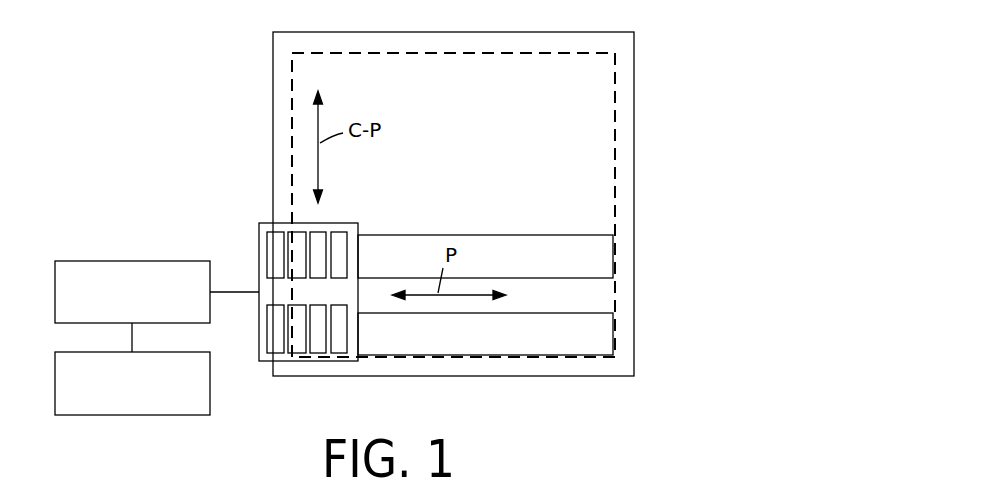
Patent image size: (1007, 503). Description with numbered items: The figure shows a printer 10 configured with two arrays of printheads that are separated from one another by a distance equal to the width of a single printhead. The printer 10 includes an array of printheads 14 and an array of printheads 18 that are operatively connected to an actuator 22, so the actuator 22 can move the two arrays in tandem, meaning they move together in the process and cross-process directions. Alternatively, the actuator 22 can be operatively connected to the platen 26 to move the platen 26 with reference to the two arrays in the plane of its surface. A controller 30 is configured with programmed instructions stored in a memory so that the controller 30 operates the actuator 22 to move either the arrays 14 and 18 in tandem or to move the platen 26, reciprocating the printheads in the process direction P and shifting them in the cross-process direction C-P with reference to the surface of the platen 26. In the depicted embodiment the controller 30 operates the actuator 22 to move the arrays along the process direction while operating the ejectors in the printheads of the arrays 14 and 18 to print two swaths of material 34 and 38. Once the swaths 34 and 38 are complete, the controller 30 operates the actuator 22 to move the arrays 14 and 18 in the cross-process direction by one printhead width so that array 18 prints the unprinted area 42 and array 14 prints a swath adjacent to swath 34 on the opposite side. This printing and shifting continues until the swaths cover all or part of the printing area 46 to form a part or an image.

The printer 10 is at (176, 48).
The array of printheads 14 is at (337, 232).
The array of printheads 18 is at (337, 353).
The actuator 22 is at (133, 261).
The platen 26 is at (273, 138).
The controller 30 is at (212, 390).
The swath of material 34 is at (598, 258).
The swath of material 38 is at (598, 335).
The unprinted area 42 is at (560, 303).
The printing area 46 is at (510, 155).